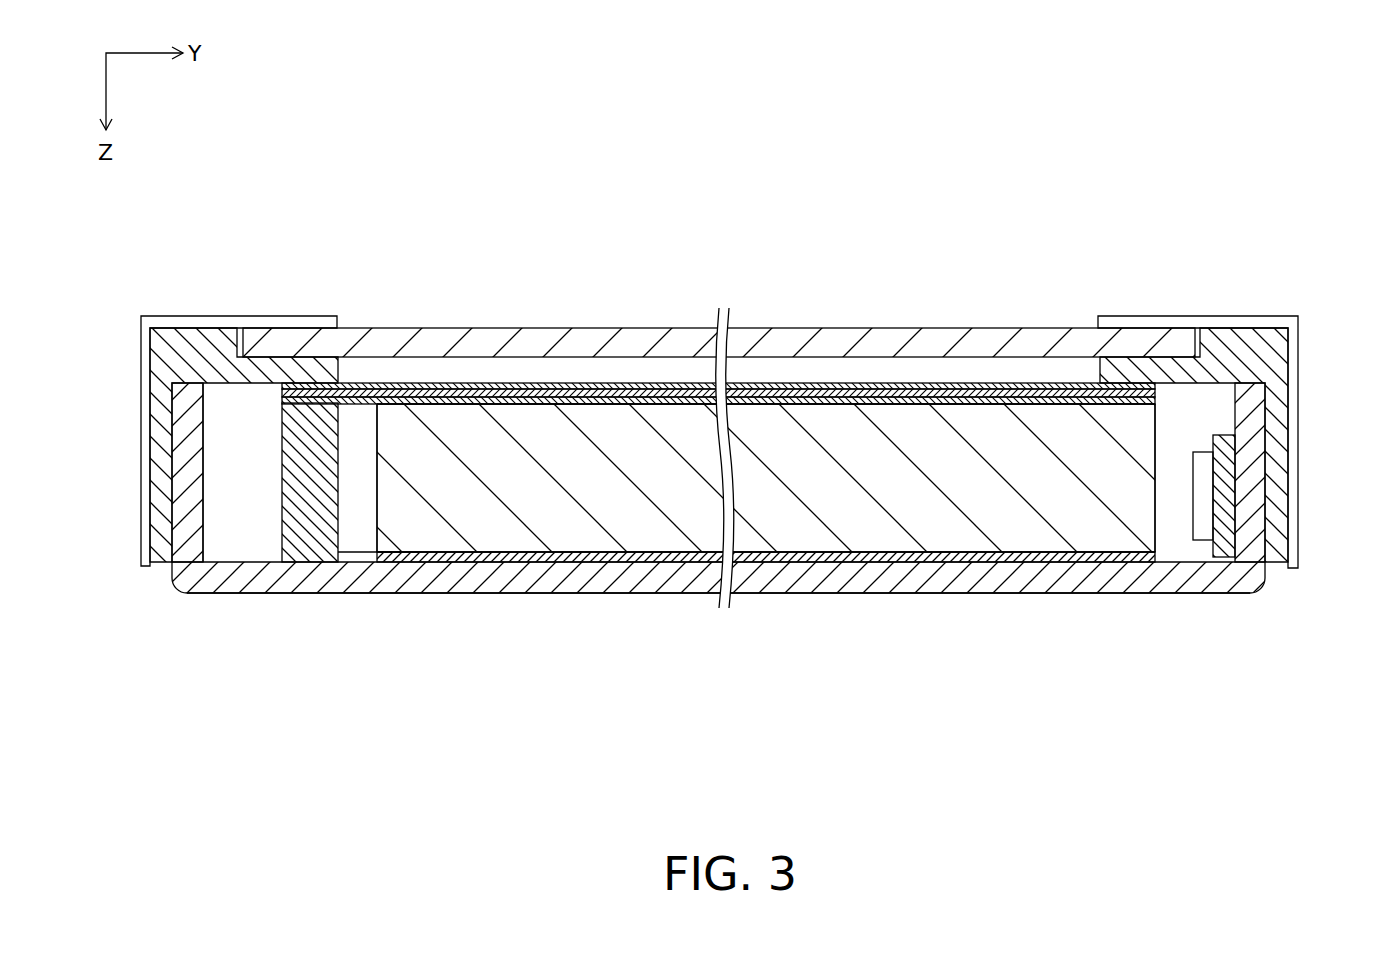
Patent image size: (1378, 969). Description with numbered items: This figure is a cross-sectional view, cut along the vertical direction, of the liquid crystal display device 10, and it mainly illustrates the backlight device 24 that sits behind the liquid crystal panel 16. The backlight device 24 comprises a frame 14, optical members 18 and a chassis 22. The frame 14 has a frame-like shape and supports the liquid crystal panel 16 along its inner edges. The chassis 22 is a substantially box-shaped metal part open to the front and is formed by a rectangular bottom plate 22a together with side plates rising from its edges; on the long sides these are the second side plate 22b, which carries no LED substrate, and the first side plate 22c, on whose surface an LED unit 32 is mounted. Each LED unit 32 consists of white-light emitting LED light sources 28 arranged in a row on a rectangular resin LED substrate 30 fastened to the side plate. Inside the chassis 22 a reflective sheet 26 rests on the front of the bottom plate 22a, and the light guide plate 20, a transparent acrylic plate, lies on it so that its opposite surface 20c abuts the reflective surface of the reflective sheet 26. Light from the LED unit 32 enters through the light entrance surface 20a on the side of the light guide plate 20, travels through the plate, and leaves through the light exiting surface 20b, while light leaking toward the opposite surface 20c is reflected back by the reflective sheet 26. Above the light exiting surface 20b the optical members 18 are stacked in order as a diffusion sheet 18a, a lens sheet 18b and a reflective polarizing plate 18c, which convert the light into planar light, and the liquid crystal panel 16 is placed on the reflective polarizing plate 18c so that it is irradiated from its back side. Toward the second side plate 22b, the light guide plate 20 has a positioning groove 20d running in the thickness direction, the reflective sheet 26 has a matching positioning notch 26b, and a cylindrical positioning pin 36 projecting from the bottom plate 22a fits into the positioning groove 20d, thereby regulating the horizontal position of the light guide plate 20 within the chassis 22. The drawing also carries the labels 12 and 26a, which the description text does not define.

The liquid crystal display device 10 is at (791, 281).
The frame 12 is at (168, 322).
The frame 14 is at (203, 352).
The liquid crystal panel 16 is at (284, 345).
The optical members 18 is at (667, 272).
The diffusion sheet 18a is at (540, 400).
The lens sheet 18b is at (570, 394).
The reflective polarizing plate 18c is at (637, 386).
The light guide plate 20 is at (856, 490).
The light entrance surface 20a is at (1155, 522).
The light exiting surface 20b is at (946, 402).
The opposite surface 20c is at (975, 550).
The positioning groove 20d is at (378, 488).
The chassis 22 is at (677, 578).
The bottom plate 22a is at (637, 553).
The second side plate 22b is at (190, 466).
The first side plate 22c is at (1248, 487).
The backlight device 24 is at (780, 675).
The reflective sheet 26 is at (560, 552).
The light emitting surface of light source 26a is at (475, 552).
The positioning notch 26b is at (366, 560).
The LED light source 28 is at (1200, 535).
The LED substrate 30 is at (1223, 548).
The LED unit 32 is at (1282, 682).
The positioning pin 36 is at (296, 509).